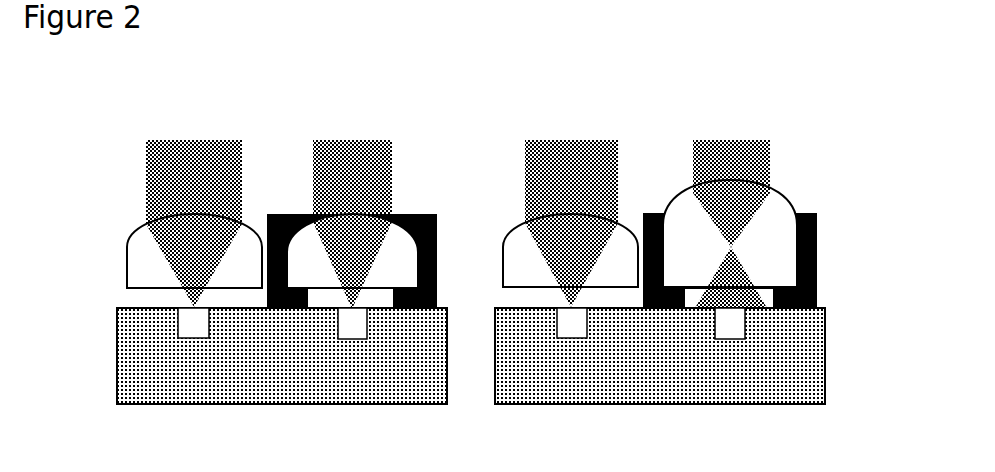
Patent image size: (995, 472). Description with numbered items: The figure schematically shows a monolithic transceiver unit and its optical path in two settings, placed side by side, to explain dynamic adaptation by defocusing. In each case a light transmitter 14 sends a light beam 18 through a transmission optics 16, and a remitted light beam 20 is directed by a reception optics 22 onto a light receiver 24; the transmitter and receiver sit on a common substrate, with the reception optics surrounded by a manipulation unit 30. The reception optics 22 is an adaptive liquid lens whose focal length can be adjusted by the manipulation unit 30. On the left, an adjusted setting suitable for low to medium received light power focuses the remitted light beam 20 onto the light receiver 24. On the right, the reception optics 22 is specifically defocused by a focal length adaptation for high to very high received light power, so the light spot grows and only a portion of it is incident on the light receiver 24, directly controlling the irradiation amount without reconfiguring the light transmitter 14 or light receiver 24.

The light transmitter 14 is at (471, 384).
The transmission optics 16 is at (368, 234).
The light beam 18 is at (411, 202).
The remitted light beam 20 is at (514, 224).
The reception optics 22 is at (386, 250).
The light receiver 24 is at (570, 384).
The manipulation unit 30 is at (538, 297).